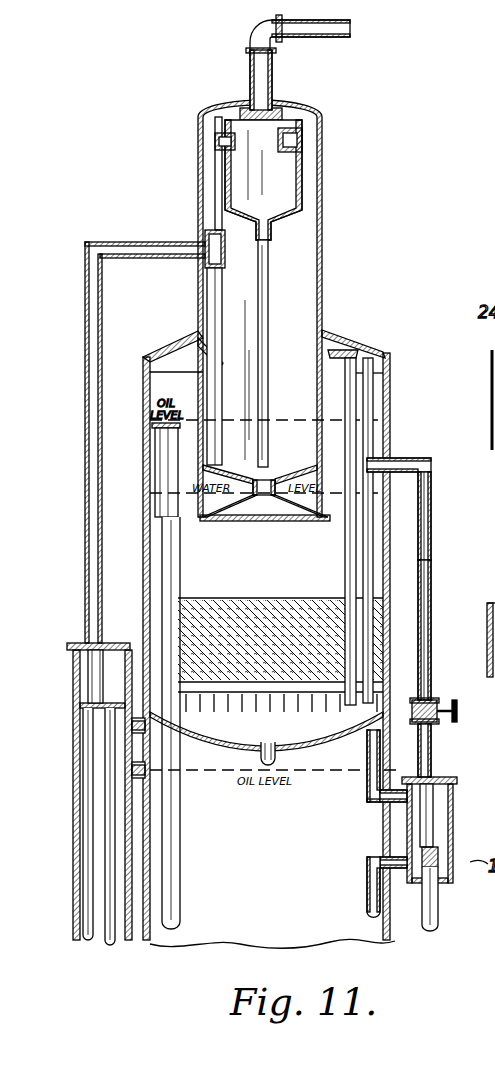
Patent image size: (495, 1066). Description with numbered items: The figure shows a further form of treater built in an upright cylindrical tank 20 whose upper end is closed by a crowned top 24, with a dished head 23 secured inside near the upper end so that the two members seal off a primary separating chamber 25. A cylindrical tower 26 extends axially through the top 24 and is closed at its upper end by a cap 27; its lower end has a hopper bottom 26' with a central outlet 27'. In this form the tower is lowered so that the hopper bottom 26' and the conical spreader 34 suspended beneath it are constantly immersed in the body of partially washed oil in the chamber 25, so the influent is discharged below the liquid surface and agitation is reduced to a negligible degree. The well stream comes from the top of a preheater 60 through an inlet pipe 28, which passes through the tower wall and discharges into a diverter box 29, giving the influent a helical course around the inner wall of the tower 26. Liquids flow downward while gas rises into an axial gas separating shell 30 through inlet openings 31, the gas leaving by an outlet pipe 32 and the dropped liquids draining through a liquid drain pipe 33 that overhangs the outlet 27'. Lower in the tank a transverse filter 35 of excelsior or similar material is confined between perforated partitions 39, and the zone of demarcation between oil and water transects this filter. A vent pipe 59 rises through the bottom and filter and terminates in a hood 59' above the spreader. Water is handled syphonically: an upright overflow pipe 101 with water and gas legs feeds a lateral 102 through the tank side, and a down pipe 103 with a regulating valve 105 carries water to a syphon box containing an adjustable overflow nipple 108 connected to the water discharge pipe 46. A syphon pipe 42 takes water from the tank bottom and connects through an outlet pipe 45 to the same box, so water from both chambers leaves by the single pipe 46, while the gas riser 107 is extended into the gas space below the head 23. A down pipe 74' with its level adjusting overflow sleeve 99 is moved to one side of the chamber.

The tank 20 is at (388, 585).
The dished head 23 is at (216, 745).
The crowned top 24 is at (190, 333).
The primary separating chamber 25 is at (188, 537).
The tower 26 is at (285, 308).
The hopper bottom 26' is at (281, 467).
The cap 27 is at (294, 98).
The central outlet 27' is at (260, 443).
The inlet pipe 28 is at (135, 242).
The diverter box 29 is at (205, 232).
The gas separating shell 30 is at (302, 176).
The inlet openings 31 is at (305, 140).
The outlet pipe 32 is at (273, 63).
The liquid drain pipe 33 is at (268, 287).
The conical spreader 34 is at (287, 513).
The filter 35 is at (298, 630).
The perforated partitions 39 is at (230, 598).
The syphon pipe 42 is at (367, 896).
The outlet pipe 45 is at (380, 858).
The water discharge pipe 46 is at (437, 915).
The vent pipe 59 is at (336, 531).
The hood 59' is at (355, 330).
The preheater 60 is at (73, 672).
The down pipe 74' is at (192, 723).
The overflow sleeve 99 is at (160, 445).
The overflow pipe 101 is at (367, 513).
The lateral 102 is at (428, 440).
The down pipe 103 is at (432, 574).
The regulating valve 105 is at (432, 680).
The gas riser 107 is at (367, 757).
The overflow nipple 108 is at (440, 838).